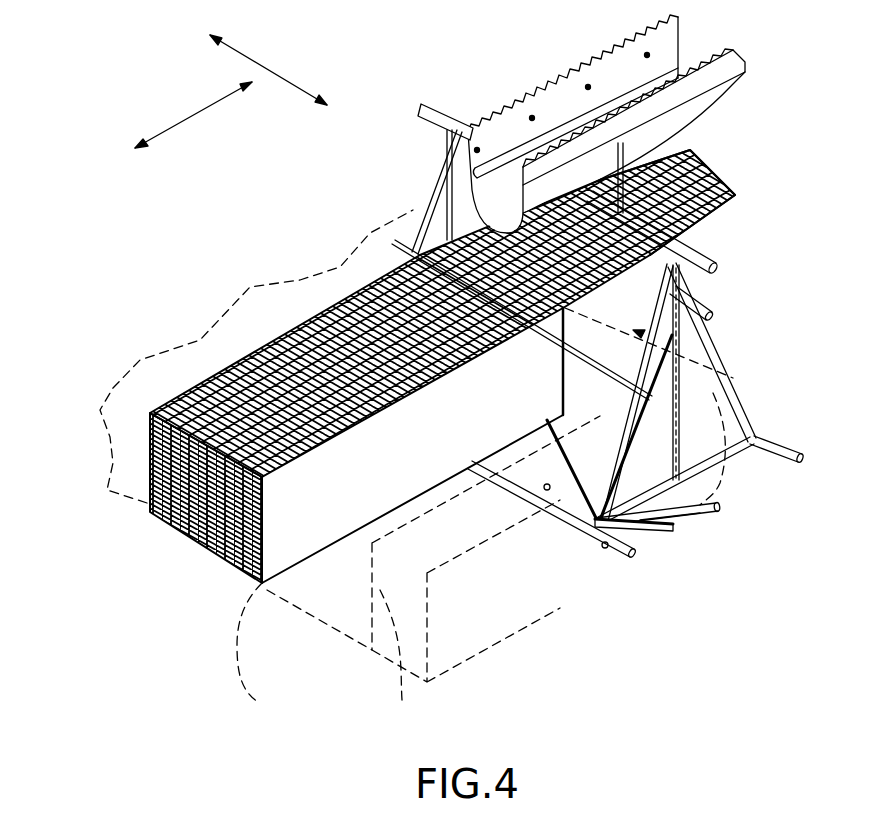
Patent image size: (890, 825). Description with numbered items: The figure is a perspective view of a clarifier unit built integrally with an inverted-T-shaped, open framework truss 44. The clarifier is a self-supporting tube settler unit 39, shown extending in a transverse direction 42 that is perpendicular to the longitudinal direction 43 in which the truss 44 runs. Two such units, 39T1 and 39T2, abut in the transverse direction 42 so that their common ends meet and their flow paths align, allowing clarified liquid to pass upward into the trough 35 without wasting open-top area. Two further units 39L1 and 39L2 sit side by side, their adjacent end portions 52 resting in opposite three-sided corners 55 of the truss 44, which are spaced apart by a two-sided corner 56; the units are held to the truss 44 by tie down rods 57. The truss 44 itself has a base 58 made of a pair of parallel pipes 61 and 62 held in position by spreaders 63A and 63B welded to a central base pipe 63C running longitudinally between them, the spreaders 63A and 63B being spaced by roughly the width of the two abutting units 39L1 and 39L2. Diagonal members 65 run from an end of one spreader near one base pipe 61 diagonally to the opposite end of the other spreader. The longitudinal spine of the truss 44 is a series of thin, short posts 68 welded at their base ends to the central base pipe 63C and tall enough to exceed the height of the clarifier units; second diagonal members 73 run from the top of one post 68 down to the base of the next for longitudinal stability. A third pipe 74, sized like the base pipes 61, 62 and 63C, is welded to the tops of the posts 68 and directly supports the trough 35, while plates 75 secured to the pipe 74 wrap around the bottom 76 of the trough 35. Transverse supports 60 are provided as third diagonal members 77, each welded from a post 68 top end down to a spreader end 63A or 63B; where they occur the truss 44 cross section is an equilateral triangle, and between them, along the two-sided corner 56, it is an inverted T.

The trough 35 is at (728, 88).
The tube settler unit 39 is at (150, 505).
The tube settler unit 39T1 is at (163, 397).
The tube settler unit 39T2 is at (742, 185).
The tube settler unit 39L1 is at (145, 447).
The tube settler unit 39L2 is at (258, 702).
The transverse direction 42 is at (208, 107).
The longitudinal direction 43 is at (258, 62).
The open frame truss 44 is at (716, 262).
The end portions 52 is at (262, 580).
The three-sided corners 55 is at (447, 205).
The two-sided corner 56 is at (580, 323).
The tie down rods 57 is at (404, 248).
The base 58 is at (722, 508).
The transverse supports 60 is at (545, 490).
The base pipe 61 is at (798, 447).
The base pipe 62 is at (603, 548).
The spreader 63A is at (677, 527).
The spreader 63B is at (730, 470).
The central base pipe 63C is at (687, 517).
The diagonal members 65 is at (545, 530).
The post 68 is at (441, 175).
The second diagonal member 73 is at (714, 314).
The third pipe 74 is at (430, 100).
The plates 75 is at (622, 147).
The bottom 76 is at (708, 115).
The third diagonal member 77 is at (416, 246).